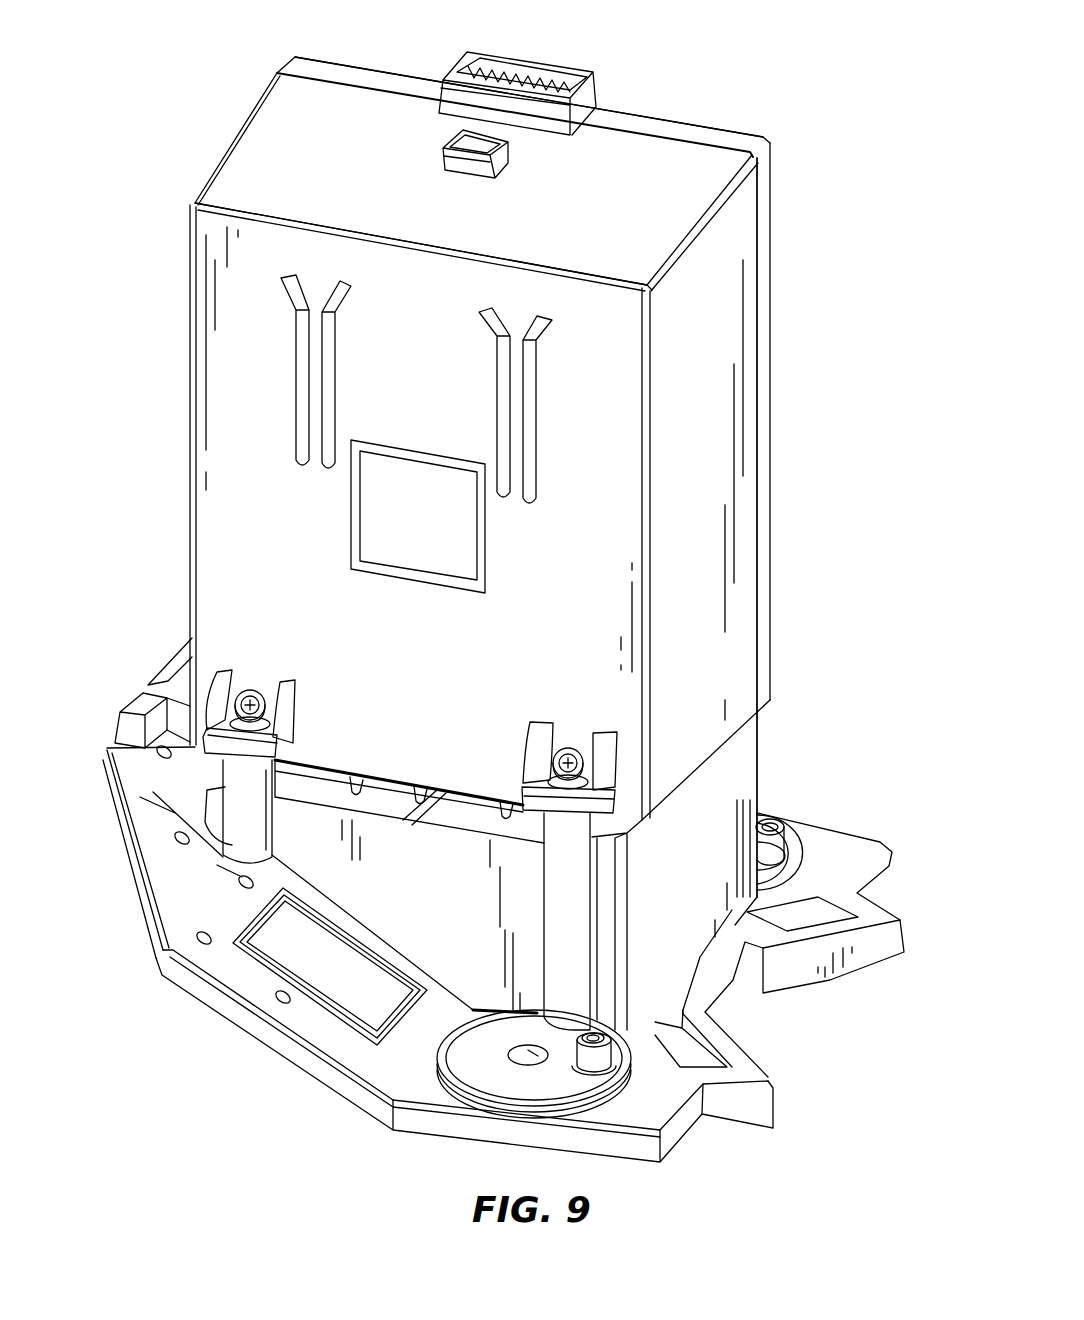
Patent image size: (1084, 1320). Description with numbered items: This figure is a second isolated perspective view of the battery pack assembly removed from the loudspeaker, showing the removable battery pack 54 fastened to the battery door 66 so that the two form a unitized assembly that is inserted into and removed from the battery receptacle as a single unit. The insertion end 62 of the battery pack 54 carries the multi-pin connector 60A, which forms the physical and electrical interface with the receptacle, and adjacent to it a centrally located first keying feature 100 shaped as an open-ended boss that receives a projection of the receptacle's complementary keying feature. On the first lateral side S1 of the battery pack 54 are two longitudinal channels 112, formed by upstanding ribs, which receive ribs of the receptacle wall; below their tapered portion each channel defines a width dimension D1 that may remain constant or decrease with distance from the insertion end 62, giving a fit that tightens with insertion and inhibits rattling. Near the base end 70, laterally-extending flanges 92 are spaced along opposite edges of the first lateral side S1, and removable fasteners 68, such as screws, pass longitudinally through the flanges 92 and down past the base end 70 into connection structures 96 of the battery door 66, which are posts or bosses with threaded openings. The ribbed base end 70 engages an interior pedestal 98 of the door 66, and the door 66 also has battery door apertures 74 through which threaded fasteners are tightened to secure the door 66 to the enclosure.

The removable battery pack 54 is at (715, 332).
The insertion end 62 is at (647, 178).
The multi-pin connector 60A is at (543, 72).
The first keying feature 100 is at (437, 128).
The longitudinal channels 112 is at (312, 334).
The width dimension D1 is at (332, 387).
The first lateral side S1 is at (432, 637).
The removable fasteners 68 is at (250, 697).
The laterally-extending flanges 92 is at (175, 738).
The interior pedestal 98 is at (737, 803).
The connection structures 96 is at (247, 807).
The battery door apertures 74 is at (473, 1010).
The base end 70 is at (675, 800).
The battery door 66 is at (143, 887).